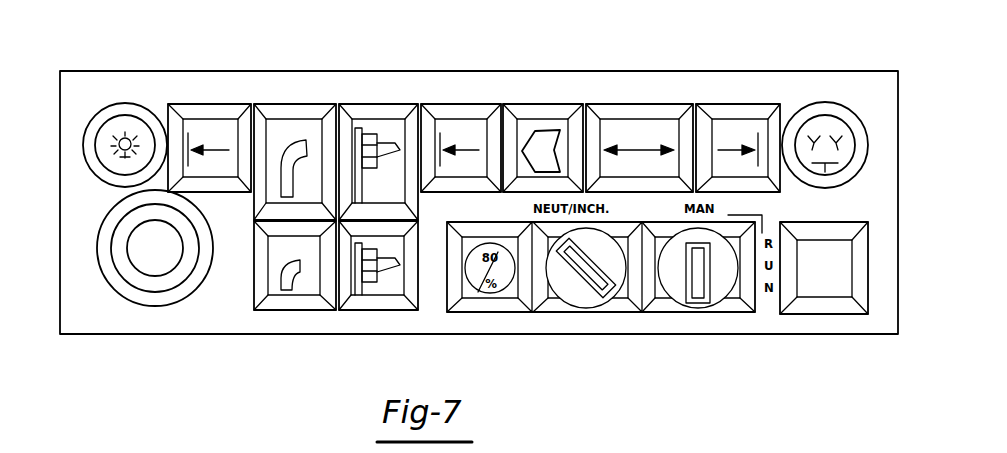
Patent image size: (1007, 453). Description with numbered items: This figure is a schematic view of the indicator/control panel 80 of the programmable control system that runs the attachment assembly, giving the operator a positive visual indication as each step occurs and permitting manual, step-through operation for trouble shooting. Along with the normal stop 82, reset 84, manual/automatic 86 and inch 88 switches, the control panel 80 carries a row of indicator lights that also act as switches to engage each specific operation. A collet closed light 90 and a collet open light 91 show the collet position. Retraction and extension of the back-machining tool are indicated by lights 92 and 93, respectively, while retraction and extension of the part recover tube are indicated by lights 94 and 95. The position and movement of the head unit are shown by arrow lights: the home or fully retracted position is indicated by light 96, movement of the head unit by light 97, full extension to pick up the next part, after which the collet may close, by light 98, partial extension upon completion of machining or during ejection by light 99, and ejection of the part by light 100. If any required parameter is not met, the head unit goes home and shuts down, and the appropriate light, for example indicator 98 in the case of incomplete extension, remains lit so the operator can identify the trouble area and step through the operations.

The indicator/control panel 80 is at (700, 66).
The stop switch 82 is at (166, 275).
The reset switch 84 is at (825, 295).
The manual/automatic switch 86 is at (720, 297).
The inch switch 88 is at (580, 300).
The collet closed light 90 is at (126, 112).
The collet open light 91 is at (821, 128).
The back-machining tool retraction light 92 is at (388, 290).
The back-machining tool extension light 93 is at (388, 125).
The part recover tube retraction light 94 is at (305, 290).
The part recover tube extension light 95 is at (293, 128).
The home position light 96 is at (740, 128).
The head unit movement light 97 is at (630, 128).
The full extension light 98 is at (215, 125).
The partial extension light 99 is at (465, 125).
The ejection light 100 is at (525, 128).